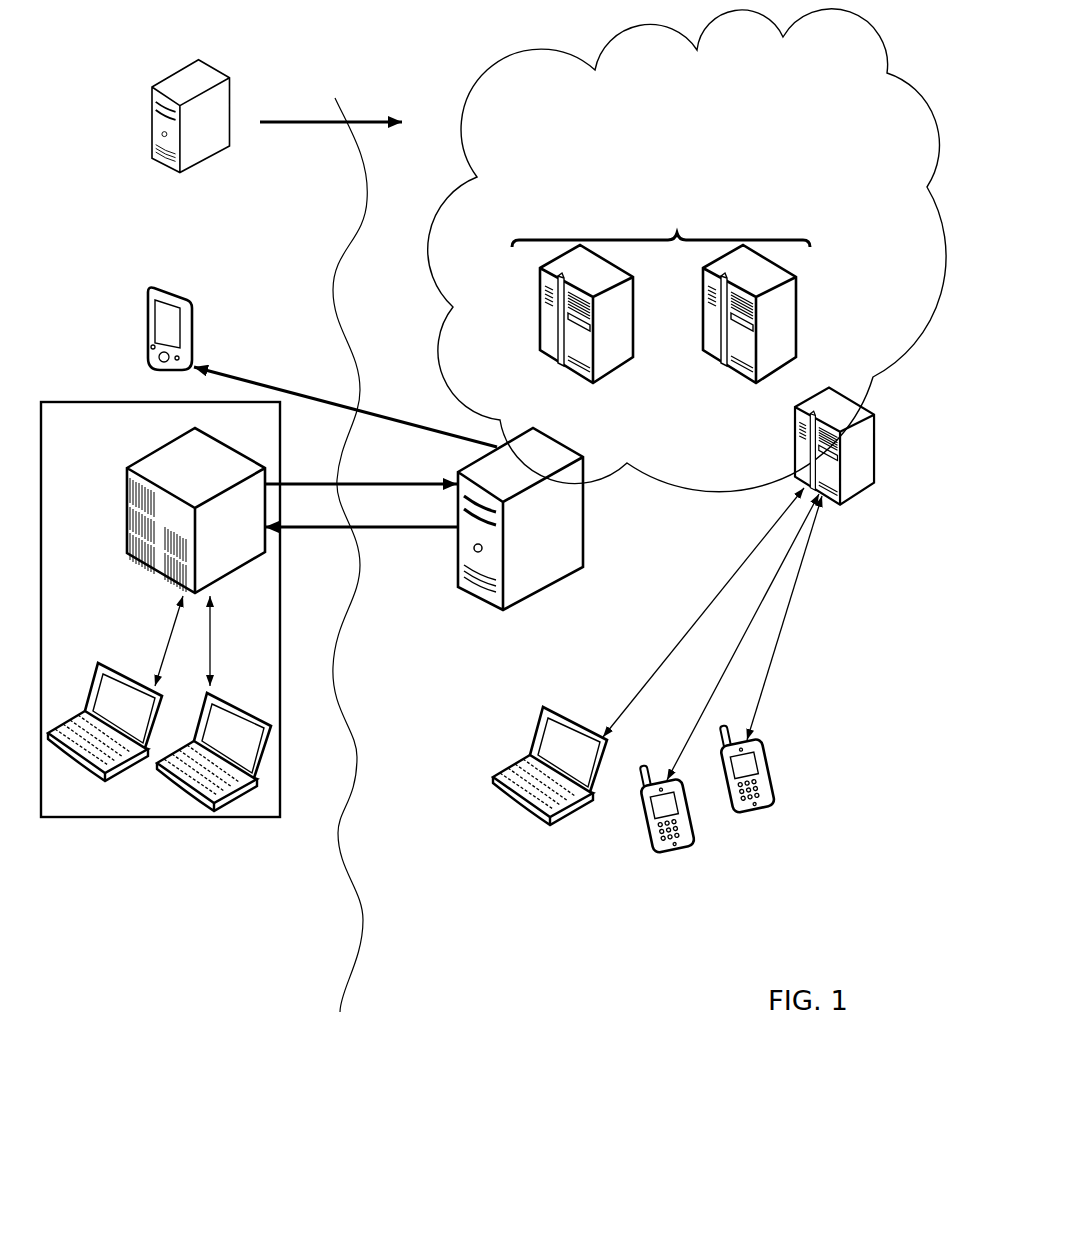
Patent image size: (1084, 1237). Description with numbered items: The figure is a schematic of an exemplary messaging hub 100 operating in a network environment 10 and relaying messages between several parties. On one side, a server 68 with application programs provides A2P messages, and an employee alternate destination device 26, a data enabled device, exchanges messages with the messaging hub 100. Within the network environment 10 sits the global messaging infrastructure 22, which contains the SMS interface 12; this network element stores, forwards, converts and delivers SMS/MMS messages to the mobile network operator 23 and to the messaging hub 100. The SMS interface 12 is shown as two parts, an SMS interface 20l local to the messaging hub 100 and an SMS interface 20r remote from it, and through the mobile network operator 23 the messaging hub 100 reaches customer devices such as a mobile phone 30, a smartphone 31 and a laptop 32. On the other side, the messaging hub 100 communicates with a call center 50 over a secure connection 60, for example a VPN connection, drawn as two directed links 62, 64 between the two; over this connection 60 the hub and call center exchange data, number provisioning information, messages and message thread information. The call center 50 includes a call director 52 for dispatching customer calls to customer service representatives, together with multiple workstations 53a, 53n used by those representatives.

The network environment 10 is at (669, 250).
The global messaging infrastructure 22 is at (741, 103).
The SMS interface 12 is at (661, 278).
The SMS interface local to messaging hub 20l is at (604, 286).
The SMS interface remote from messaging hub 20r is at (767, 286).
The mobile network operator 23 is at (852, 425).
The server 68 is at (243, 67).
The messaging hub 100 is at (558, 430).
The employee alternate destination device 26 is at (186, 292).
The call center 50 is at (82, 448).
The call director 52 is at (252, 533).
The workstation 53a is at (116, 657).
The workstation 53n is at (225, 687).
The secure connection 60 is at (361, 525).
The outbound link 62 is at (413, 480).
The inbound link 64 is at (377, 530).
The laptop 32 is at (568, 708).
The mobile phone 30 is at (762, 752).
The smartphone 31 is at (645, 853).